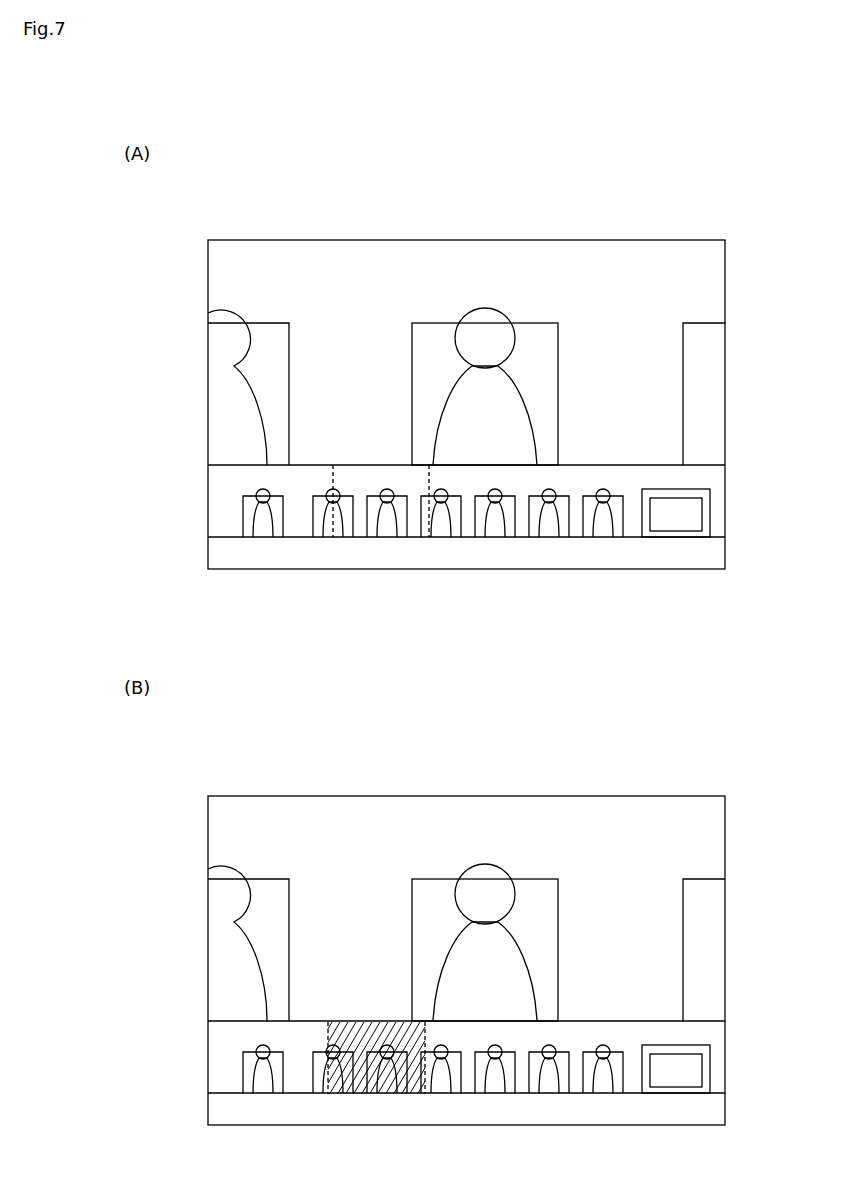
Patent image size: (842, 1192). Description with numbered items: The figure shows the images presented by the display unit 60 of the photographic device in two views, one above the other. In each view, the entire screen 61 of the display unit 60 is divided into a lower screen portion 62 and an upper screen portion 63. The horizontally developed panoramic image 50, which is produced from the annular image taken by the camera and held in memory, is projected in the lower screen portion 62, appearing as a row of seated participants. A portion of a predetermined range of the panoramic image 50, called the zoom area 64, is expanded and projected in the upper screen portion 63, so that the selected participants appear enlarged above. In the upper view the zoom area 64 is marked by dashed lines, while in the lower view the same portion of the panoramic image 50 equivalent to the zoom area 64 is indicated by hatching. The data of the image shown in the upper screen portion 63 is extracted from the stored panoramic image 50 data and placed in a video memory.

The display unit 60 is at (718, 197).
The entire screen 61 is at (725, 338).
The lower screen portion 62 is at (715, 478).
The upper screen portion 63 is at (703, 270).
The zoom area 64 is at (415, 515).
The panoramic image 50 is at (715, 523).